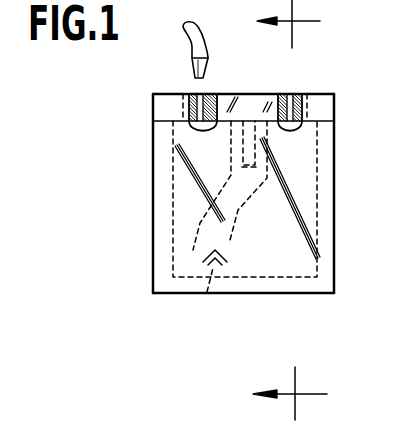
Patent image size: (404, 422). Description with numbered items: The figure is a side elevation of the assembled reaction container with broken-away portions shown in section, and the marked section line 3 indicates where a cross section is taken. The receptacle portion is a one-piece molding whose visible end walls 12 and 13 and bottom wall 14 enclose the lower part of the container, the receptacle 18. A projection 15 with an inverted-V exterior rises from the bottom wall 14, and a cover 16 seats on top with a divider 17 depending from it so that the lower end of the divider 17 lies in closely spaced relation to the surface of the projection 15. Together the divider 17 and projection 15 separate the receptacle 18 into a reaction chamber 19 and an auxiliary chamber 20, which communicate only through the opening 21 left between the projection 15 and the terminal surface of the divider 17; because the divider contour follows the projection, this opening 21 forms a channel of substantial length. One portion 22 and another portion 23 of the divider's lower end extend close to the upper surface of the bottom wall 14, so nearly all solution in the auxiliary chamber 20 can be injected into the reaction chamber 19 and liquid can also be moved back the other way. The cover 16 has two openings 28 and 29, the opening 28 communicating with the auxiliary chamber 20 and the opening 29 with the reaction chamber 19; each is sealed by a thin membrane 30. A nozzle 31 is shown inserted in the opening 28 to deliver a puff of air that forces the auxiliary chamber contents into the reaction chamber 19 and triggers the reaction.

The section line 3- 3 is at (277, 210).
The end wall 12 is at (334, 169).
The end wall 13 is at (153, 185).
The bottom wall 14 is at (265, 293).
The projection 15 is at (205, 293).
The cover 16 is at (150, 107).
The divider 17 is at (248, 209).
The receptacle 18 is at (208, 155).
The reaction chamber 19 is at (286, 231).
The auxiliary chamber 20 is at (191, 210).
The opening 21 is at (236, 242).
The portion 22 is at (202, 258).
The portion 23 is at (228, 257).
The opening 28 is at (200, 105).
The opening 29 is at (296, 106).
The membrane 30 is at (198, 94).
The nozzle 31 is at (204, 67).